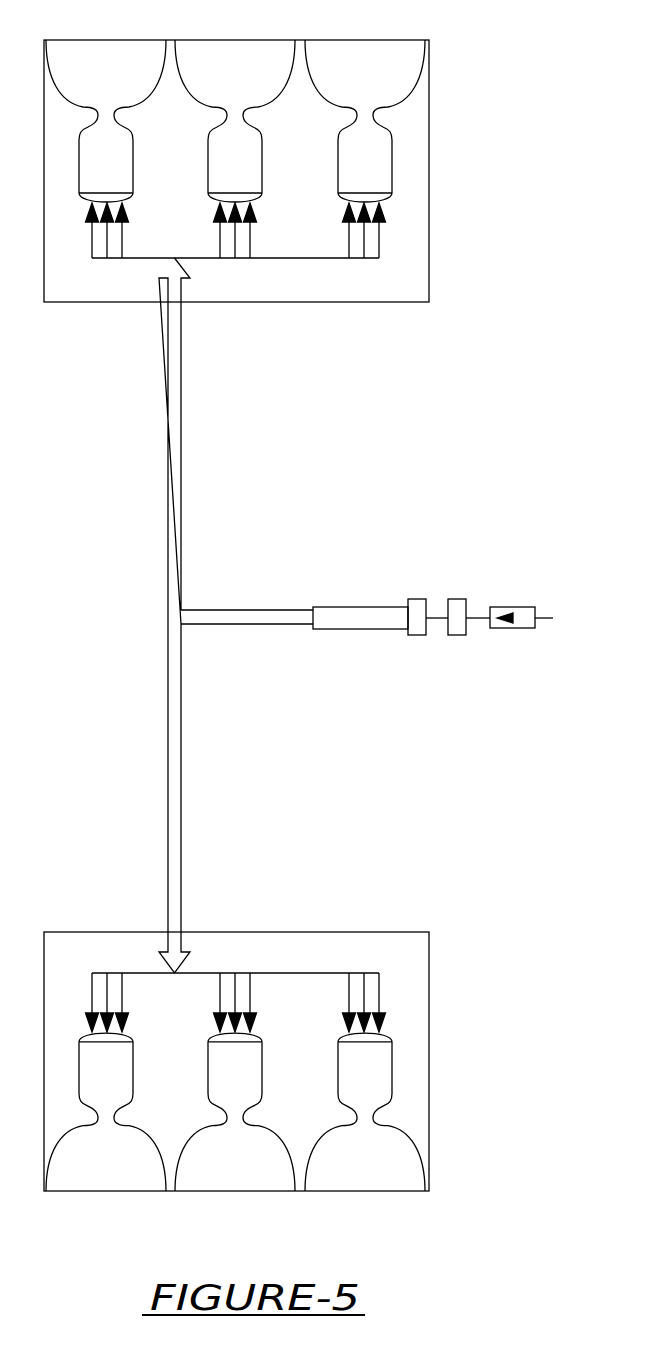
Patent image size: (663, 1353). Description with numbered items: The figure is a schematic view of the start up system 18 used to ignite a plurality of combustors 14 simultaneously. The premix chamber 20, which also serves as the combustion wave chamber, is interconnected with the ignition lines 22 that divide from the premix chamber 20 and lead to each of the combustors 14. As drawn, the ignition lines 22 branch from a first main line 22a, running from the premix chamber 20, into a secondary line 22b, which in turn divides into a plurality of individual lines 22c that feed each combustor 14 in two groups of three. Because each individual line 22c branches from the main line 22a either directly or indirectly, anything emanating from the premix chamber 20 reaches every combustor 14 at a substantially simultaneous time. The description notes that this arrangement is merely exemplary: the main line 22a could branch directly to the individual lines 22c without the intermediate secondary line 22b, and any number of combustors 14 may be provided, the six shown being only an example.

The combustor 14 is at (127, 55).
The start up system 18 is at (467, 508).
The premix chamber 20 is at (378, 605).
The ignition lines 22 is at (236, 617).
The first main line 22a is at (274, 610).
The secondary line 22b is at (182, 444).
The individual lines 22c is at (238, 247).